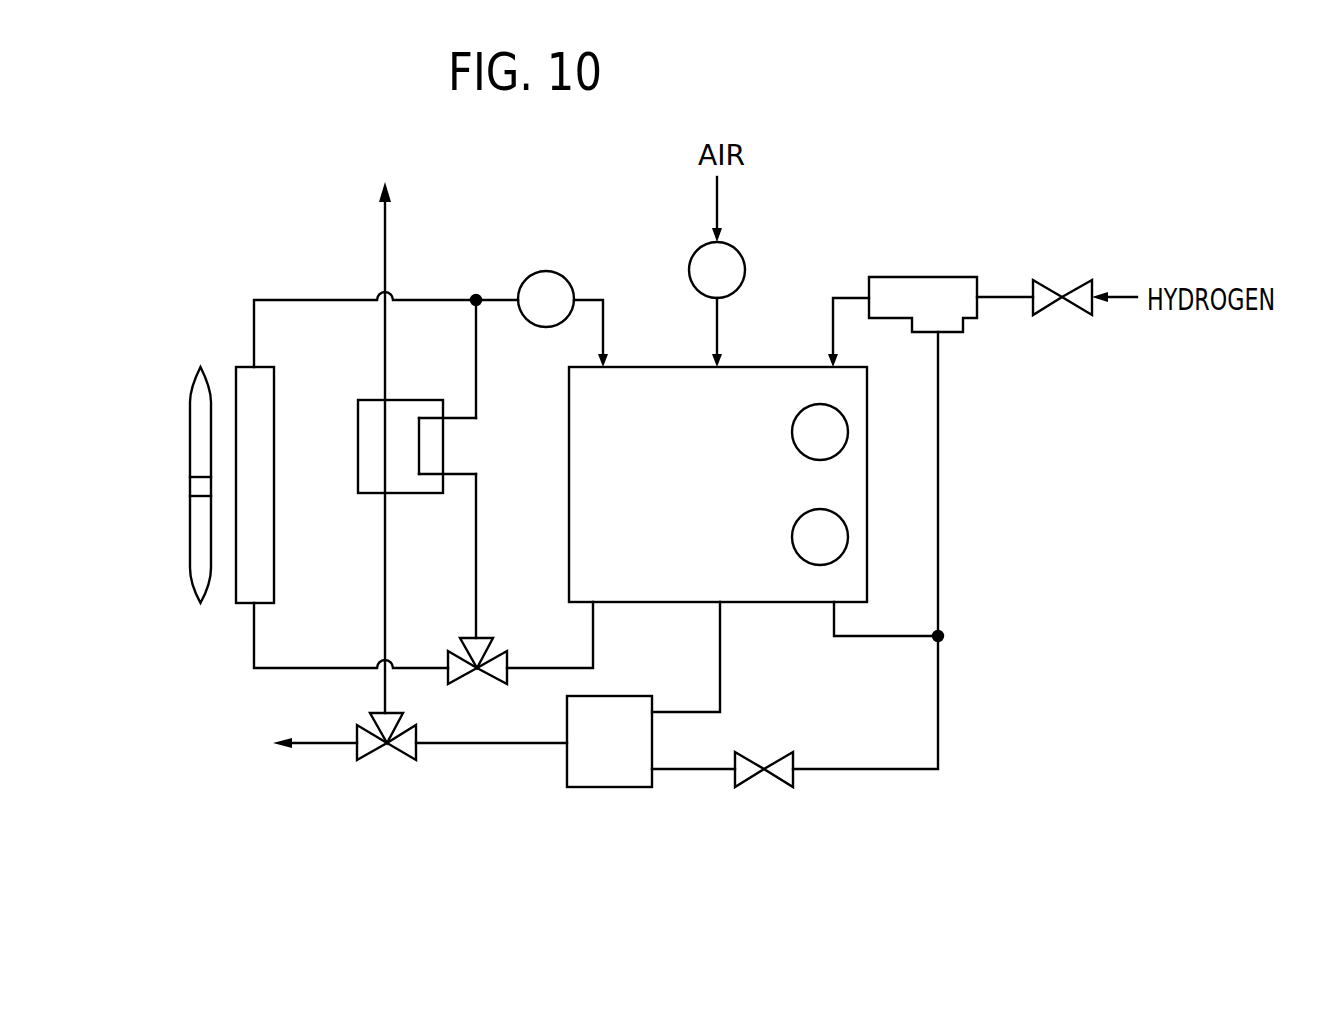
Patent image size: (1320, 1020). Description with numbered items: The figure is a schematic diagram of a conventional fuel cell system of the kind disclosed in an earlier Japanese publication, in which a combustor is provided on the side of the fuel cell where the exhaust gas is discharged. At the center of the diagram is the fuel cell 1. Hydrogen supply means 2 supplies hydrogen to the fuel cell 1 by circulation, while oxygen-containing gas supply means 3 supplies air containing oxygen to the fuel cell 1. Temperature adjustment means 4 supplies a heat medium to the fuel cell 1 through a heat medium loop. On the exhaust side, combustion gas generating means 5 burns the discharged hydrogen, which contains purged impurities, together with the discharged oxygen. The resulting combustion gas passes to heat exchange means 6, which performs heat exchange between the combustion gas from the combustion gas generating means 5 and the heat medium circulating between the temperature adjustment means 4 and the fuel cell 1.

The fuel cell 1 is at (569, 430).
The hydrogen supply means 2 is at (910, 272).
The oxygen-containing gas supply means 3 is at (756, 222).
The temperature adjustment means 4 is at (228, 334).
The combustion gas generating means 5 is at (567, 718).
The heat exchange means 6 is at (358, 448).